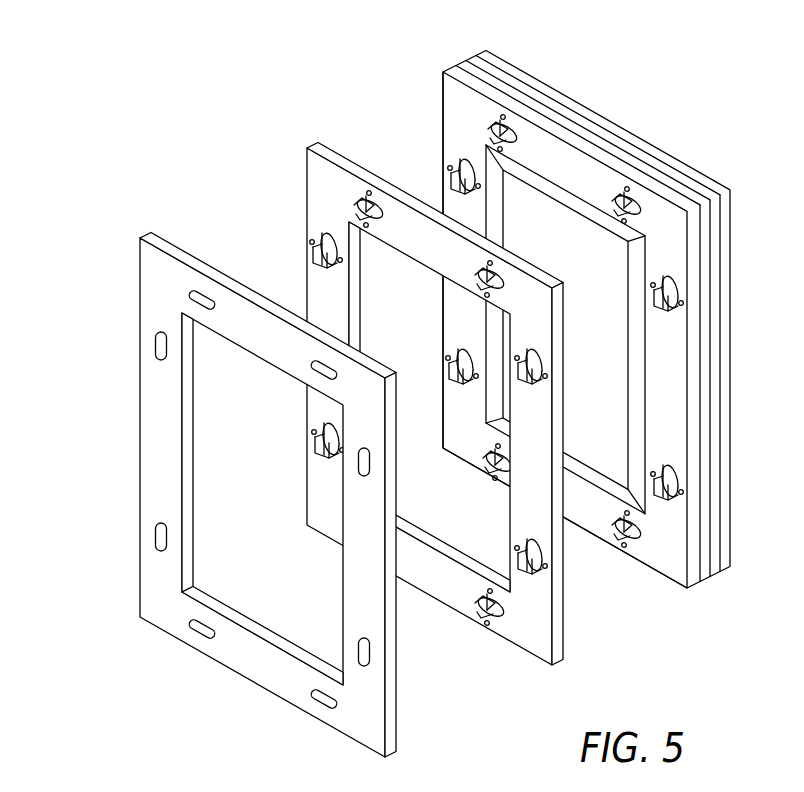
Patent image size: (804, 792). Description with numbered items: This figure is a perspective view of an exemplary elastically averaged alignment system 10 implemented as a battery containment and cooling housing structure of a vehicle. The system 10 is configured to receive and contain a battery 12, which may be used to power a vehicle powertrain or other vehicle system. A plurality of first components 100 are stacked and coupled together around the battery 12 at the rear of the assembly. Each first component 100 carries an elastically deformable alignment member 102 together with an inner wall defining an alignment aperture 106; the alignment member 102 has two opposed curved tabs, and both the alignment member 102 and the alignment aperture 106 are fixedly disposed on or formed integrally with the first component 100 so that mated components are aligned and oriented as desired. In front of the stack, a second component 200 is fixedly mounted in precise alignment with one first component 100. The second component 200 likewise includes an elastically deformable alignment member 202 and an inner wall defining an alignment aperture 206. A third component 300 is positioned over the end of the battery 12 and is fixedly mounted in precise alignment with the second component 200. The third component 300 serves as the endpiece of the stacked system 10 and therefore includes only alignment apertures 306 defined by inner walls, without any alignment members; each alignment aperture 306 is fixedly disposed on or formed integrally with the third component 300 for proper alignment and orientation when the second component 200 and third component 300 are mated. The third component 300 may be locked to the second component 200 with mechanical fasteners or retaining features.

The elastically averaged alignment system 10 is at (333, 13).
The battery 12 is at (598, 366).
The first component 100 is at (573, 335).
The elastically deformable alignment member 102 is at (444, 198).
The alignment aperture 106 is at (463, 153).
The second component 200 is at (437, 383).
The elastically deformable alignment member 202 is at (521, 582).
The alignment aperture 206 is at (541, 543).
The third component 300 is at (227, 459).
The alignment aperture 306 is at (164, 333).